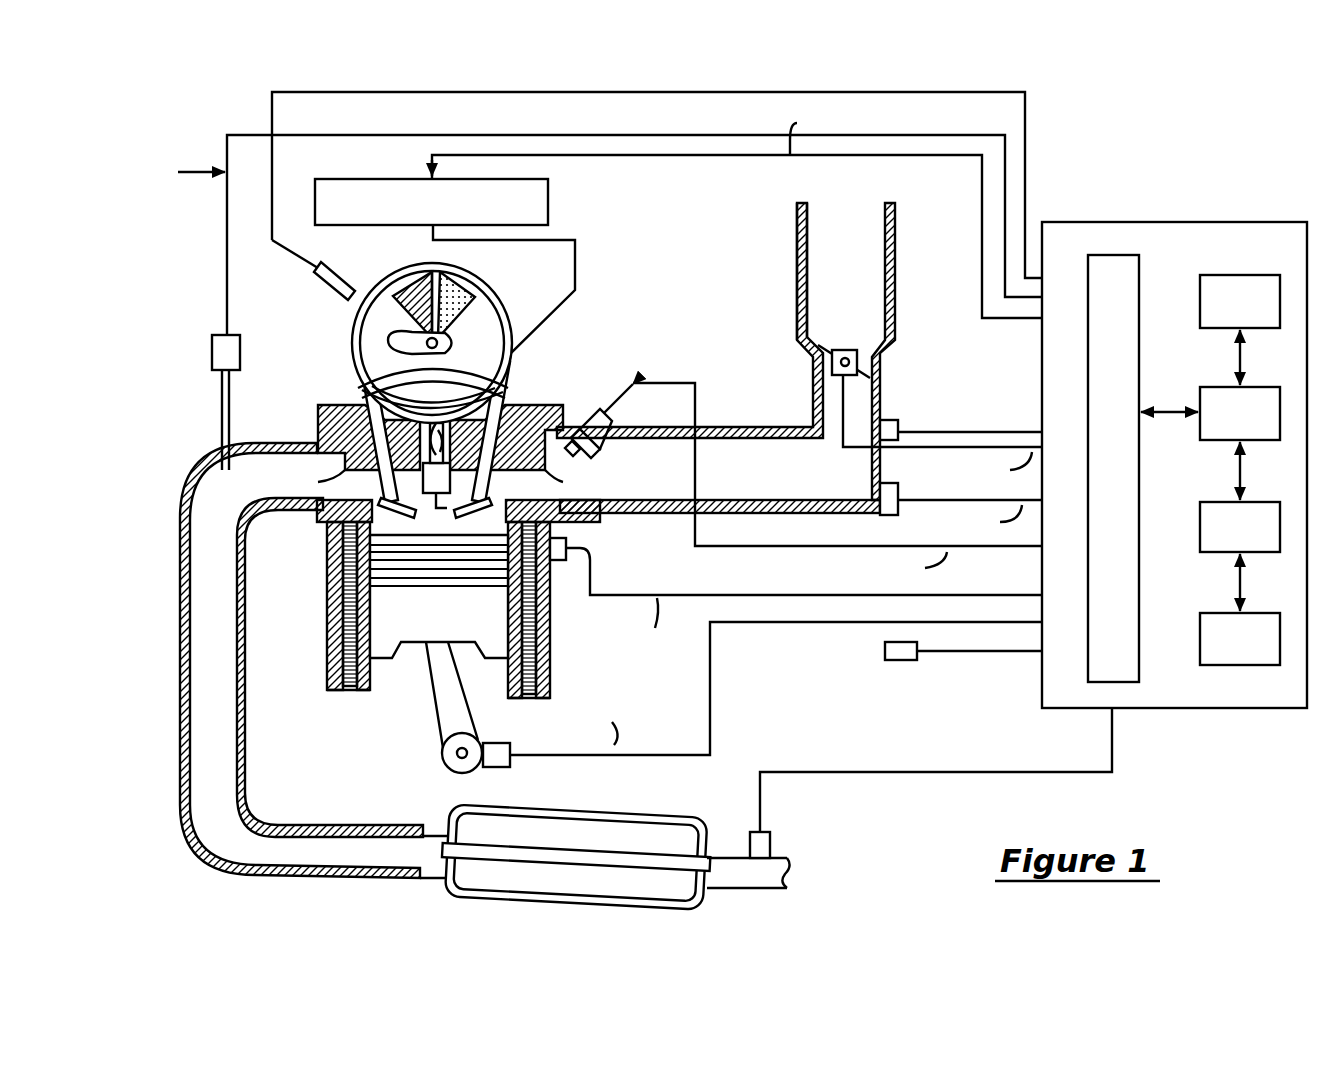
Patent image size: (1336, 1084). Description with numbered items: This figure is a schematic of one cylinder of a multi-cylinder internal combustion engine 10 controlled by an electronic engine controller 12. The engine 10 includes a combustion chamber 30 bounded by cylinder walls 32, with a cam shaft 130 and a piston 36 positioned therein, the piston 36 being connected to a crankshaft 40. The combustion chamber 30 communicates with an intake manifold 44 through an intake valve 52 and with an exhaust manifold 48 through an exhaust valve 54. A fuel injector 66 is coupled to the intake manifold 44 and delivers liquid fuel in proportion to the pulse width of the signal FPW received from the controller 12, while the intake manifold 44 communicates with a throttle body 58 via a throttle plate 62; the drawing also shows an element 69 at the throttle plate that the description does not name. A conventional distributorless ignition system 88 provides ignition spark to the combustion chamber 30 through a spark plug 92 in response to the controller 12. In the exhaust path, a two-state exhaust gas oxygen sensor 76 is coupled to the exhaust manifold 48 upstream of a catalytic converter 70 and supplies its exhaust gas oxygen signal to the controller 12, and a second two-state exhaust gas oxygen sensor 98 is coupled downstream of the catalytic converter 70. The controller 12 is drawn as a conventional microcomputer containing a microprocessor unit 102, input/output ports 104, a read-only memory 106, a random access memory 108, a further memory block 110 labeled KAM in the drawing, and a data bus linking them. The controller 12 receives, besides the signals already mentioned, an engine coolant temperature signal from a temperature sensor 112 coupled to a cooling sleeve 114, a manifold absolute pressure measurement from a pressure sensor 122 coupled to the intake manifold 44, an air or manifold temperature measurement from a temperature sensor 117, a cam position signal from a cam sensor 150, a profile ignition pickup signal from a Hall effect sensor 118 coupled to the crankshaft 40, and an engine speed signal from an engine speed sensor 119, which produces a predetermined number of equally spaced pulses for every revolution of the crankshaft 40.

The internal combustion engine 10 is at (548, 351).
The electronic engine controller 12 is at (1172, 221).
The combustion chamber 30 is at (372, 567).
The cylinder walls 32 is at (376, 690).
The piston 36 is at (444, 625).
The crankshaft 40 is at (442, 757).
The intake manifold 44 is at (790, 484).
The exhaust manifold 48 is at (205, 518).
The intake valve 52 is at (500, 492).
The exhaust valve 54 is at (385, 488).
The throttle body 58 is at (830, 405).
The throttle plate 62 is at (838, 346).
The fuel injector 66 is at (597, 447).
The throttle position sensor 69 is at (858, 392).
The catalytic converter 70 is at (527, 818).
The two-state exhaust gas oxygen sensor 76 is at (212, 355).
The distributorless ignition system 88 is at (325, 179).
The spark plug 92 is at (435, 423).
The two-state exhaust gas oxygen sensor 98 is at (747, 826).
The microprocessor unit 102 is at (1205, 387).
The input/output ports 104 is at (1142, 268).
The read-only memory 106 is at (1238, 275).
The random access memory 108 is at (1208, 502).
The keep alive memory (KAM) 110 is at (1210, 613).
The temperature sensor 112 is at (598, 555).
The cooling sleeve 114 is at (330, 696).
The temperature sensor 117 is at (903, 428).
The Hall effect sensor 118 is at (505, 743).
The engine speed sensor 119 is at (908, 668).
The pressure sensor 122 is at (898, 490).
The cam shaft 130 is at (405, 340).
The cam sensor 150 is at (336, 289).